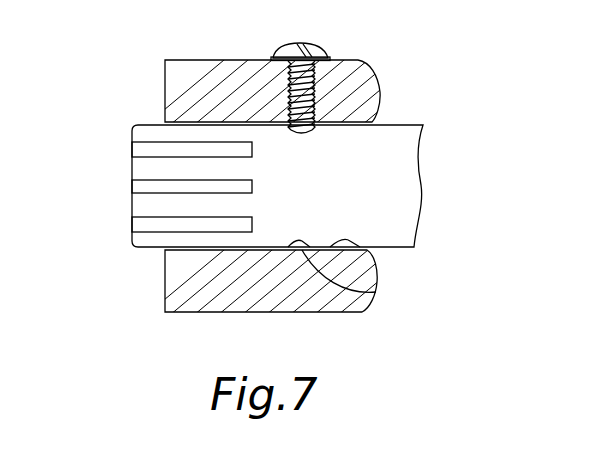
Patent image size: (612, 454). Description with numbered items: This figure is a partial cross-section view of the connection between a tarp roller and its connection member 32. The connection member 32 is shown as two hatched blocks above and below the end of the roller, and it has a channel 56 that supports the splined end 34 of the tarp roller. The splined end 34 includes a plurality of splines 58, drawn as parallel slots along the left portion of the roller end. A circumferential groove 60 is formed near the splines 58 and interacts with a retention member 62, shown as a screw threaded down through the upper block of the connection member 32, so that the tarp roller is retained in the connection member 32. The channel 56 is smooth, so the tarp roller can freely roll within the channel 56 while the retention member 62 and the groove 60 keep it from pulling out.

The connection member 32 is at (190, 75).
The splined end 34 is at (152, 125).
The splines 58 is at (138, 150).
The retention member 62 is at (310, 44).
The channel 56 is at (365, 251).
The circumferential groove 60 is at (367, 296).